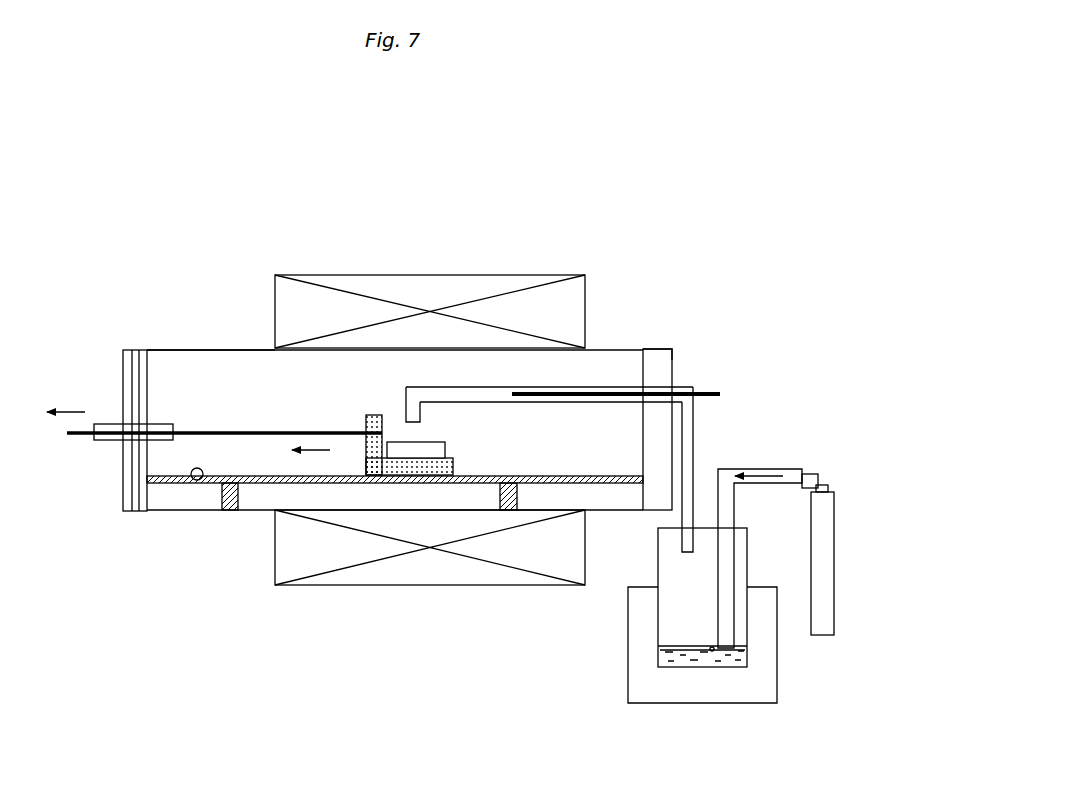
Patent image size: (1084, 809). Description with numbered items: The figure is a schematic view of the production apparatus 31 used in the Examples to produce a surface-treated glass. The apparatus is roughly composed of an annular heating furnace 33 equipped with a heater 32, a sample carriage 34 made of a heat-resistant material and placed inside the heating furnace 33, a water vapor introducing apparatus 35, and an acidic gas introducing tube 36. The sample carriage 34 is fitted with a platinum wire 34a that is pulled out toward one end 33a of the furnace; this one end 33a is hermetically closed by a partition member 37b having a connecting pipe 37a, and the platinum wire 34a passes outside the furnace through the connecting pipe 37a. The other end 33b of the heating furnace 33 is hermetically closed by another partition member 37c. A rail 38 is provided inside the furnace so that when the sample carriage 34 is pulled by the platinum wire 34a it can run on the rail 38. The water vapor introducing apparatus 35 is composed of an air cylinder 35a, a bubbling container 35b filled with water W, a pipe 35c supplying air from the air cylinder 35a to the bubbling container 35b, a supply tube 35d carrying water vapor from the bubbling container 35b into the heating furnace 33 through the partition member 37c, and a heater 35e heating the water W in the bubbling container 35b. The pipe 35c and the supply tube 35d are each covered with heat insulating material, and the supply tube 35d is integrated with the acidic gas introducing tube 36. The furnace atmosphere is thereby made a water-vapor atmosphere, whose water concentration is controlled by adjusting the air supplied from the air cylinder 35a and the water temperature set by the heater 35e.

The production apparatus 31 is at (694, 205).
The heater 32 is at (585, 300).
The heating furnace 33 is at (432, 394).
The one end of the heating furnace 33a is at (165, 350).
The other end of the heating furnace 33b is at (660, 348).
The sample carriage 34 is at (369, 415).
The platinum wire 34a is at (230, 431).
The water vapor introducing apparatus 35 is at (782, 464).
The air cylinder 35a is at (835, 548).
The bubbling container 35b is at (658, 565).
The pipe 35c is at (793, 467).
The supply tube 35d is at (695, 422).
The heater 35e is at (768, 683).
The acidic gas introducing tube 36 is at (713, 385).
The connecting pipe 37a is at (113, 424).
The partition member 37b is at (148, 362).
The partition member 37c is at (660, 492).
The rail 38 is at (193, 479).
The water W is at (675, 667).